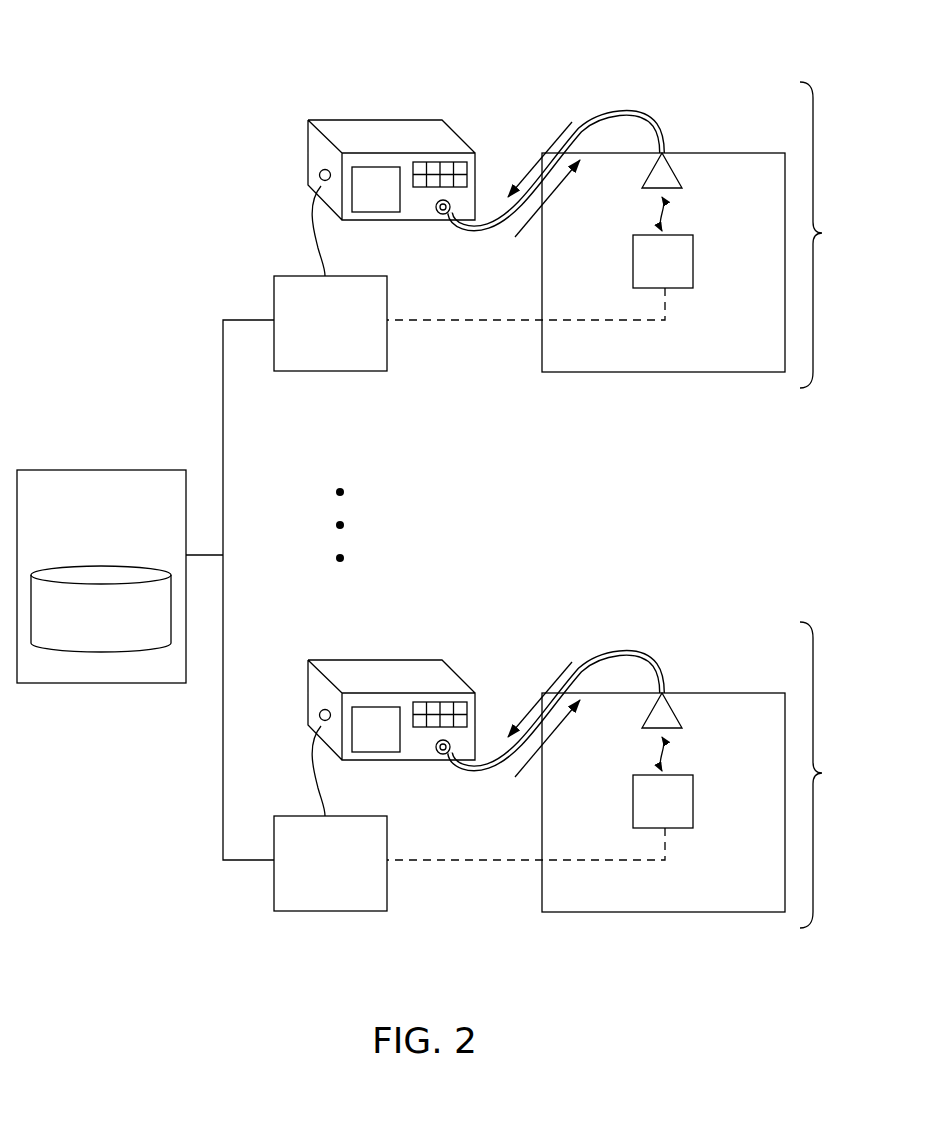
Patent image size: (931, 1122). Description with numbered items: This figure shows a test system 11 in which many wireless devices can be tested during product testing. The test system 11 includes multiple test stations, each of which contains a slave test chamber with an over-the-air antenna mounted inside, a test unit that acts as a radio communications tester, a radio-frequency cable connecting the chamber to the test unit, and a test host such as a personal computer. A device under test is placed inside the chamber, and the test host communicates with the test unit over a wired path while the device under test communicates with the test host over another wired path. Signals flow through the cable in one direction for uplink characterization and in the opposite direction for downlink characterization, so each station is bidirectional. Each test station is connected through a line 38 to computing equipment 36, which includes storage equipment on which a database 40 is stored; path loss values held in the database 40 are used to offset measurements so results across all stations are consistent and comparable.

The test system 11 is at (157, 60).
The computing equipment 36 is at (100, 470).
The line 38 is at (223, 477).
The database 40 is at (97, 652).